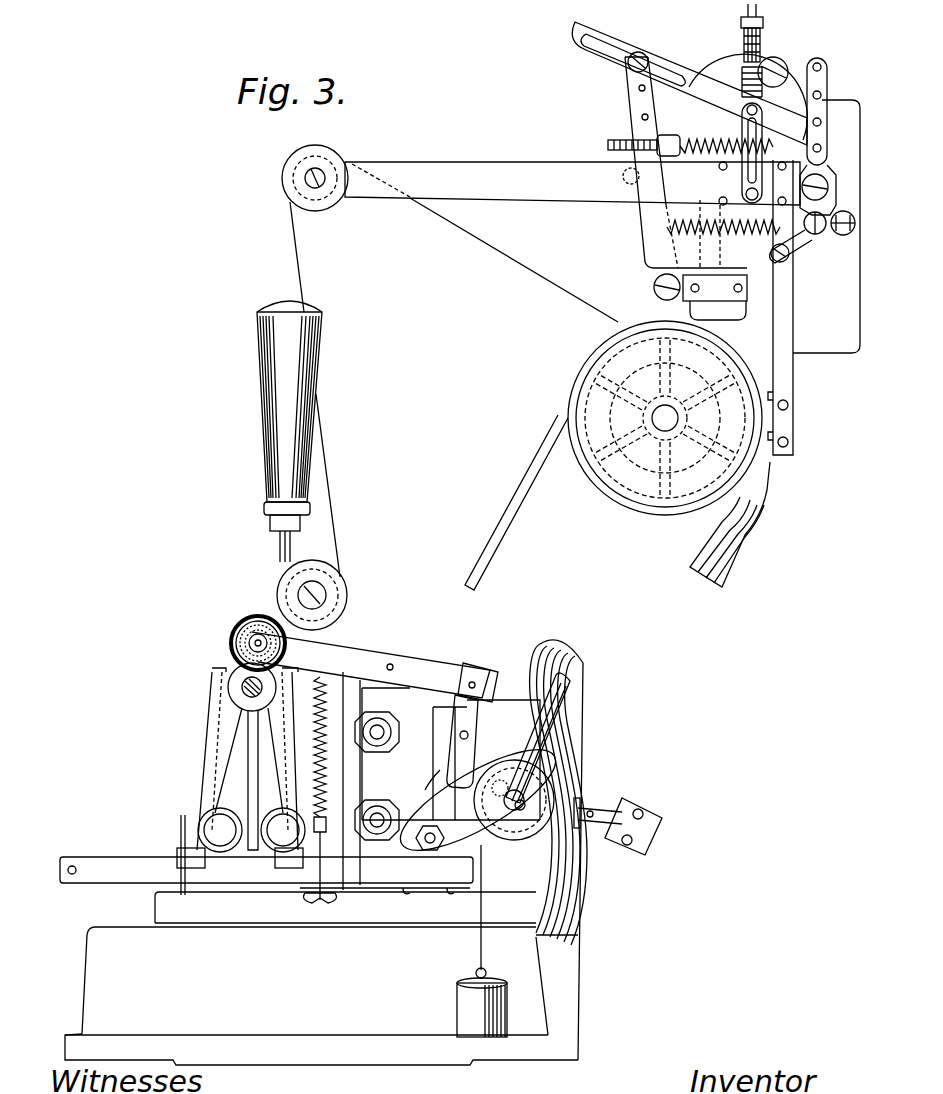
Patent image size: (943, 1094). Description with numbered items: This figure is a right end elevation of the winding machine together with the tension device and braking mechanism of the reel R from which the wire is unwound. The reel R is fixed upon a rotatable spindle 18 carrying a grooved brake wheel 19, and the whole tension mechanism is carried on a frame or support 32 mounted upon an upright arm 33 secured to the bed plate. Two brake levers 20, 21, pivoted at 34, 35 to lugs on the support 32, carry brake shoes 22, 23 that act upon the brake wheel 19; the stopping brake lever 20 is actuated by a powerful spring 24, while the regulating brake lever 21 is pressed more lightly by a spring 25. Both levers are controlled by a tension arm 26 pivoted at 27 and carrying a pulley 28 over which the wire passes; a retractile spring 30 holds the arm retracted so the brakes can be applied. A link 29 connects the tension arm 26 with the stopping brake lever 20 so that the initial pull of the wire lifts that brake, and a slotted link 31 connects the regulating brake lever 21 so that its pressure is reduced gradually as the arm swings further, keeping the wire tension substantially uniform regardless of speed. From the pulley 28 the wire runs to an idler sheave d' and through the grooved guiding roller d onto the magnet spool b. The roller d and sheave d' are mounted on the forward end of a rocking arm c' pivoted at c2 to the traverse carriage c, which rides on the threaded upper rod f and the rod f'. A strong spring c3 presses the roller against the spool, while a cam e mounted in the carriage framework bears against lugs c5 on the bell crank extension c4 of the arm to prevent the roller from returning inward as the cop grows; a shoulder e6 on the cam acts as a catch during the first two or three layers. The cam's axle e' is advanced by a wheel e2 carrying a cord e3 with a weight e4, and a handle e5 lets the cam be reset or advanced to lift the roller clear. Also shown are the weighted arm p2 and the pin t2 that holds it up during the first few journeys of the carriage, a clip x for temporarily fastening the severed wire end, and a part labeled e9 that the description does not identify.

The rotatable spindle 18 is at (665, 418).
The grooved brake wheel 19 is at (752, 462).
The stopping brake lever 20 is at (640, 110).
The regulating brake lever 21 is at (795, 372).
The brake shoe 22 is at (718, 312).
The brake shoe 23 is at (790, 442).
The spring 24 is at (723, 237).
The spring 25 is at (722, 143).
The tension arm 26 is at (572, 183).
The pivot 27 is at (828, 188).
The pulley 28 is at (300, 172).
The link 29 is at (689, 83).
The retractile spring 30 is at (744, 84).
The slotted link 31 is at (798, 238).
The frame or support 32 is at (838, 345).
The upright arm 33 is at (740, 540).
The pivot 34 is at (654, 288).
The pivot 35 is at (810, 62).
The reel R is at (592, 395).
The guiding roller d is at (250, 631).
The idler sheave d' is at (333, 595).
The rocking arm c' is at (371, 657).
The pivot c2 is at (395, 660).
The bell crank extension c4 is at (485, 745).
The magnet spool b is at (242, 687).
The clip x is at (72, 862).
The spring c3 is at (314, 728).
The traverse carriage c is at (451, 754).
The upper rod f is at (377, 748).
The rod f' is at (377, 843).
The nut e9 is at (416, 841).
The lugs c5 is at (460, 775).
The cam e is at (539, 798).
The wheel e2 is at (555, 784).
The handle e5 is at (556, 706).
The shoulder e6 is at (528, 752).
The axle e' is at (596, 836).
The cord e3 is at (498, 911).
The weight e4 is at (488, 982).
The weighted arm p2 is at (650, 816).
The pin t2 is at (600, 806).